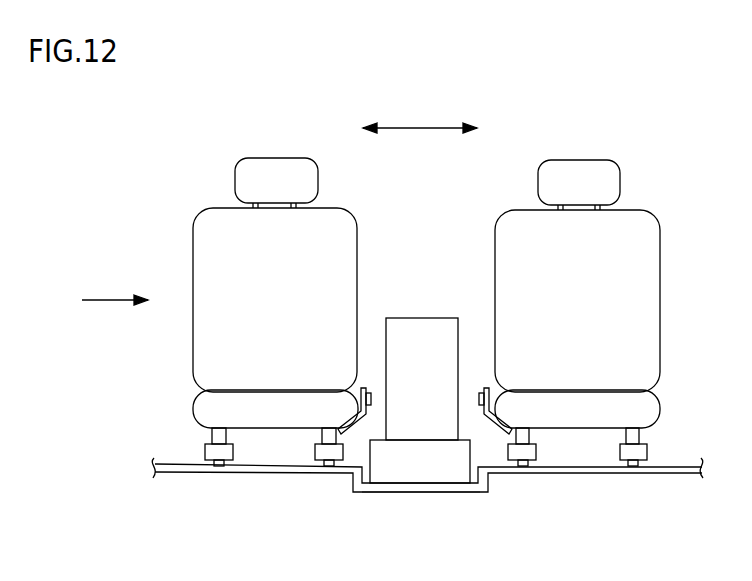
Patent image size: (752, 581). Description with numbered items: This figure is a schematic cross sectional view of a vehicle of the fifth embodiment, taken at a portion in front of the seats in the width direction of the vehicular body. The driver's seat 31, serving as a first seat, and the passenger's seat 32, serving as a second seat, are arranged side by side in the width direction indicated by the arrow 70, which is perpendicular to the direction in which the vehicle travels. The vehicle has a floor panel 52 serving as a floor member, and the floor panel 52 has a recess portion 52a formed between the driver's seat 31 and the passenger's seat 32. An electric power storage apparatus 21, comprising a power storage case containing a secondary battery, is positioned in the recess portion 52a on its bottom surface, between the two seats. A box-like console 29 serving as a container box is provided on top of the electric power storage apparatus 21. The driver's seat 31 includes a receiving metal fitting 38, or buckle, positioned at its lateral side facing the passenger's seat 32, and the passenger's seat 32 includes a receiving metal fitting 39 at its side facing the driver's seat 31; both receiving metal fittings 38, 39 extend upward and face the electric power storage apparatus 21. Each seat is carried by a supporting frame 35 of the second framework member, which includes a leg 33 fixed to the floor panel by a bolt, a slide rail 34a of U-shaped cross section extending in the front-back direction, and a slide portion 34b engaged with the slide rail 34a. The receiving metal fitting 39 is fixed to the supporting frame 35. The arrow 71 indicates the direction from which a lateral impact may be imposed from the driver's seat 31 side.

The electric power storage apparatus 21 is at (442, 468).
The console 29 is at (420, 340).
The driver's seat 31 is at (193, 269).
The passenger's seat 32 is at (660, 275).
The leg 33 is at (428, 501).
The slide rail 34a is at (214, 454).
The slide portion 34b is at (212, 437).
The supporting frame 35 is at (433, 499).
The receiving metal fitting 38 is at (363, 387).
The receiving metal fitting 39 is at (487, 387).
The floor panel 52 is at (497, 477).
The recess portion 52a is at (392, 493).
The arrow 70 is at (422, 127).
The arrow 71 is at (107, 305).